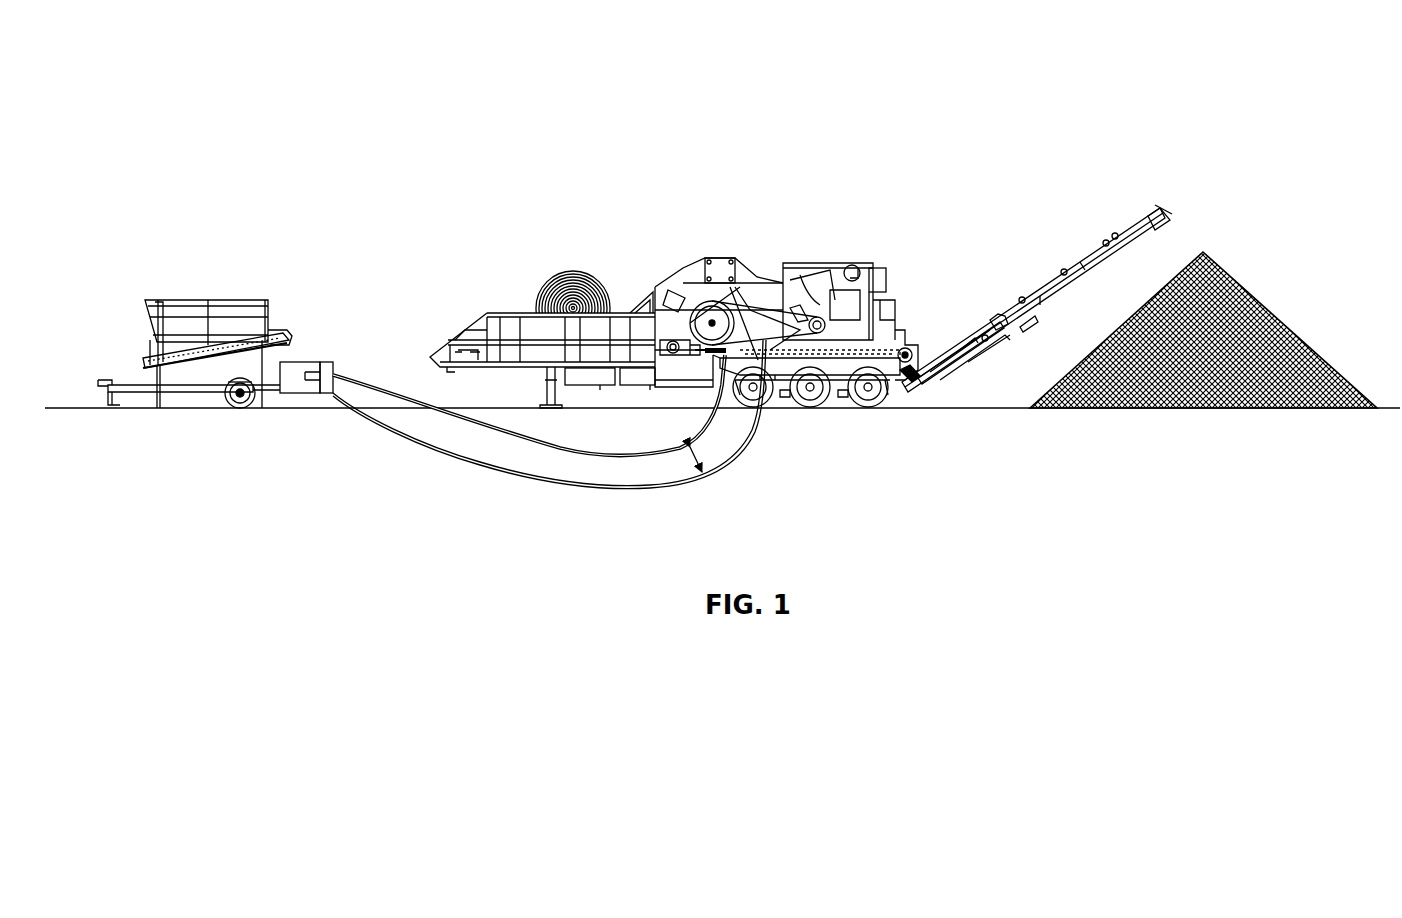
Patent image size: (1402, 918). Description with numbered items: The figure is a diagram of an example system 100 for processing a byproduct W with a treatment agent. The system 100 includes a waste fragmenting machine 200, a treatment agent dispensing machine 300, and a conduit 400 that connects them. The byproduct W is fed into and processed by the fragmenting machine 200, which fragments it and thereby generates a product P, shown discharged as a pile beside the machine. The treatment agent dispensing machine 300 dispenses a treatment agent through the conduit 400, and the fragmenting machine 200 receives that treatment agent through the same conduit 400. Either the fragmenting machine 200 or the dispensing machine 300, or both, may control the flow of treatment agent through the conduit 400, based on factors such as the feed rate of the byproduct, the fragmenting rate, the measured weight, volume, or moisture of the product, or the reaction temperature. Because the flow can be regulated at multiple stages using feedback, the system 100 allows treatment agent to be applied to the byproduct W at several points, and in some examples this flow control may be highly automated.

The system 100 is at (1000, 65).
The waste fragmenting machine 200 is at (875, 220).
The treatment agent dispensing machine 300 is at (288, 262).
The conduit 400 is at (690, 460).
The byproduct W is at (567, 272).
The product P is at (1257, 300).